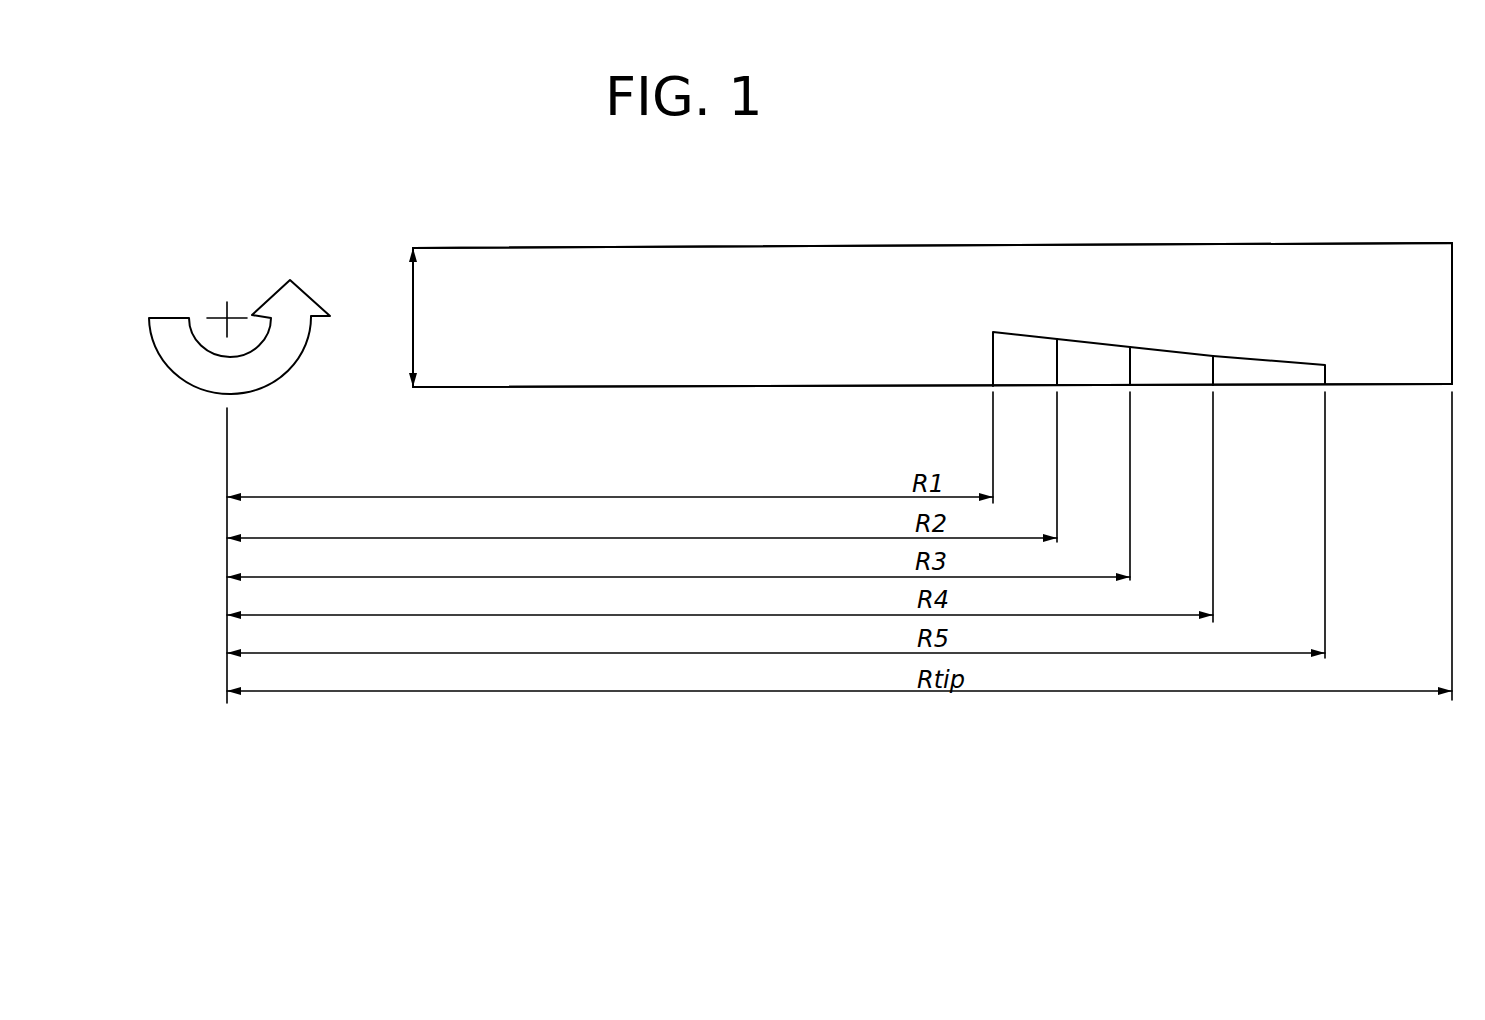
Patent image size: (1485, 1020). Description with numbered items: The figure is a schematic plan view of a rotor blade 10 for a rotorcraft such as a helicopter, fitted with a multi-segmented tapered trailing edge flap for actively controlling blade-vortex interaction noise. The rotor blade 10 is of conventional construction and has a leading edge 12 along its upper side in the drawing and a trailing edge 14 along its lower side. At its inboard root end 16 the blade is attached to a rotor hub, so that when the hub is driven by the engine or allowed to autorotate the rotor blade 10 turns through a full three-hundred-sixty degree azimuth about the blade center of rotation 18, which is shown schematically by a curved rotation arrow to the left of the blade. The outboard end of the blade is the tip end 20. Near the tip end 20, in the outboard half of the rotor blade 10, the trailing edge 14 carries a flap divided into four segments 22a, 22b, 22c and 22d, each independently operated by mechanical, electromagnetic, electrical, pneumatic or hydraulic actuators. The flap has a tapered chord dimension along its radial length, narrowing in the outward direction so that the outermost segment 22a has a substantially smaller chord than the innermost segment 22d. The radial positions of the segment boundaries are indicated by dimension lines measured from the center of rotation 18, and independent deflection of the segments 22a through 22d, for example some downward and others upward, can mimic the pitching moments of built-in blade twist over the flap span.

The rotor blade 10 is at (962, 240).
The leading edge 12 is at (567, 260).
The trailing edge 14 is at (492, 387).
The root end 16 is at (413, 248).
The blade center of rotation 18 is at (233, 313).
The tip end 20 is at (1455, 262).
The flap segment 22a is at (1275, 365).
The flap segment 22b is at (1170, 353).
The flap segment 22c is at (1090, 350).
The flap segment 22d is at (1003, 349).